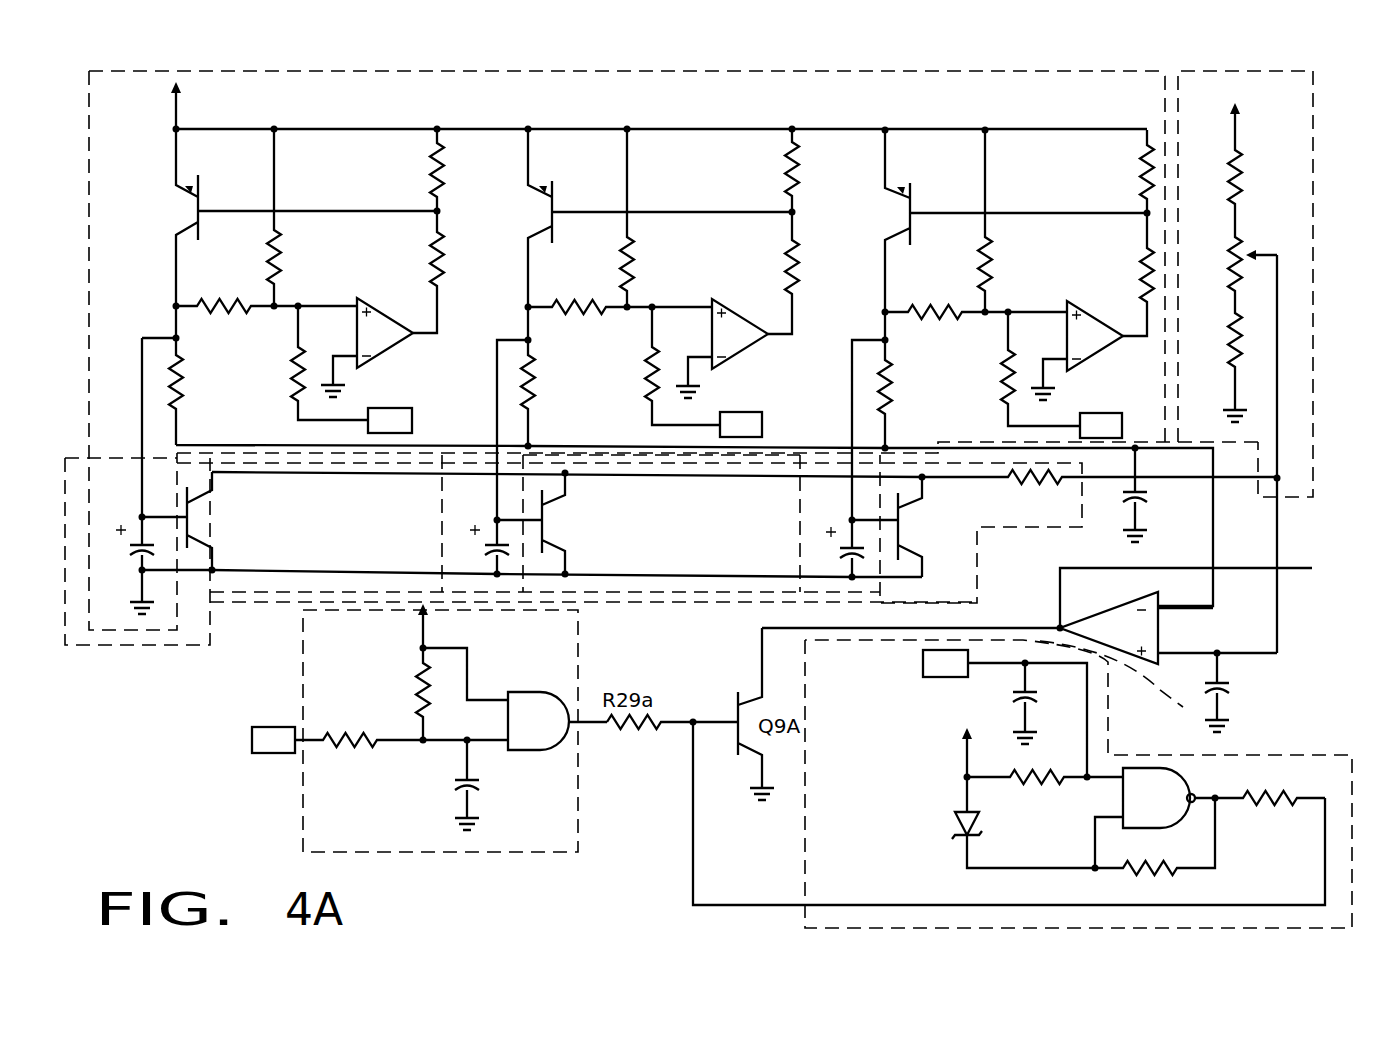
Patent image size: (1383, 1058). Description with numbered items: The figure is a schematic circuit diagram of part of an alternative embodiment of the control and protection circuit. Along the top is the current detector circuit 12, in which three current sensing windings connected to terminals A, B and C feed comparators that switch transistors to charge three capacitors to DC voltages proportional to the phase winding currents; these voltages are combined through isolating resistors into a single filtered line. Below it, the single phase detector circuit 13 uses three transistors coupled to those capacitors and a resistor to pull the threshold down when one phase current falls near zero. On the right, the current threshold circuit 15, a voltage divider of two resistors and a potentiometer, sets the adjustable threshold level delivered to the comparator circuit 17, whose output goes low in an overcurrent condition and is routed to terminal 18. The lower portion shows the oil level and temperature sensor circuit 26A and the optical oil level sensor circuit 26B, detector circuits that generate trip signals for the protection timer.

The current detector circuit 12 is at (89, 82).
The single phase detector circuit 13 is at (65, 645).
The current threshold circuit 15 is at (1313, 82).
The comparator circuit 17 is at (1060, 582).
The output terminal 18 is at (1052, 592).
The oil level and temperature sensor circuit 26A is at (598, 850).
The optical oil level sensor circuit 26B is at (1352, 755).